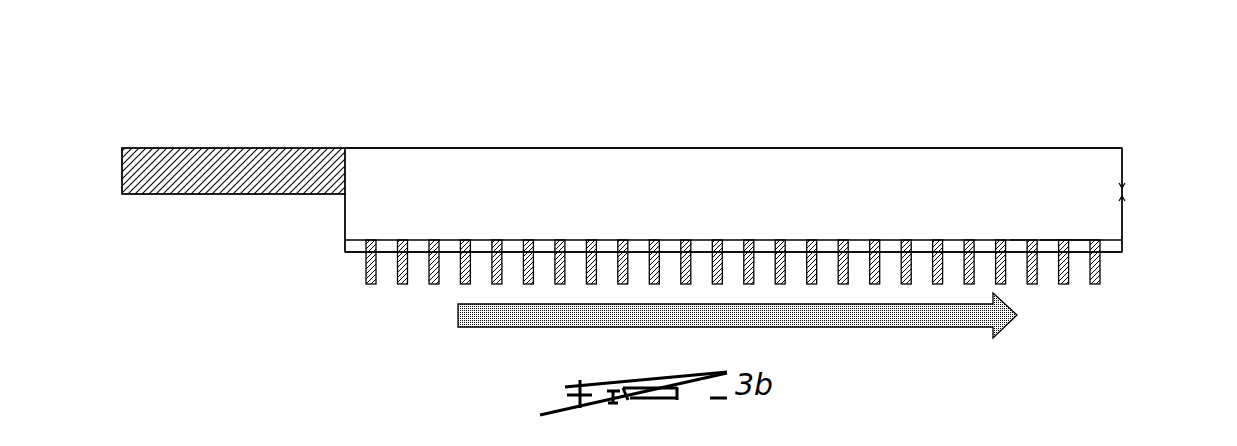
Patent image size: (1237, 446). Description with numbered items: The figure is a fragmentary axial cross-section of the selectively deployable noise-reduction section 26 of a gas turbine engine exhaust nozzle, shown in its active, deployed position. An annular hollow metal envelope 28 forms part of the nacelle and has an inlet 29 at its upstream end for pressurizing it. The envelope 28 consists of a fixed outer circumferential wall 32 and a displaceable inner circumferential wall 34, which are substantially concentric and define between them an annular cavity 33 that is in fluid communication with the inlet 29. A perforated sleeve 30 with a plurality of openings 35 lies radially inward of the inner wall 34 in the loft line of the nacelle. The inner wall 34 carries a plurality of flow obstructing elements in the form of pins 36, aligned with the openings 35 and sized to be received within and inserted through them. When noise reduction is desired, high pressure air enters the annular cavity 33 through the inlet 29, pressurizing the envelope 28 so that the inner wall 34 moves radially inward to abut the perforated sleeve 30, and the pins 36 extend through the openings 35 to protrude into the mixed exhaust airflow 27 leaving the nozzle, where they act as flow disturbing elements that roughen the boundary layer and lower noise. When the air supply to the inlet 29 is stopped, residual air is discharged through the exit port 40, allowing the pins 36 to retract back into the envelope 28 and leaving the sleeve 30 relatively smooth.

The selectively deployable noise-reduction section 26 is at (909, 110).
The mixed exhaust airflow 27 is at (852, 316).
The annular hollow metal envelope 28 is at (604, 148).
The inlet 29 is at (226, 162).
The perforated sleeve 30 is at (1114, 248).
The fixed outer circumferential wall 32 is at (987, 148).
The annular cavity 33 is at (782, 185).
The displaceable inner circumferential wall 34 is at (1018, 240).
The openings 35 is at (1050, 240).
The pins 36 is at (1037, 283).
The exit port 40 is at (1123, 190).